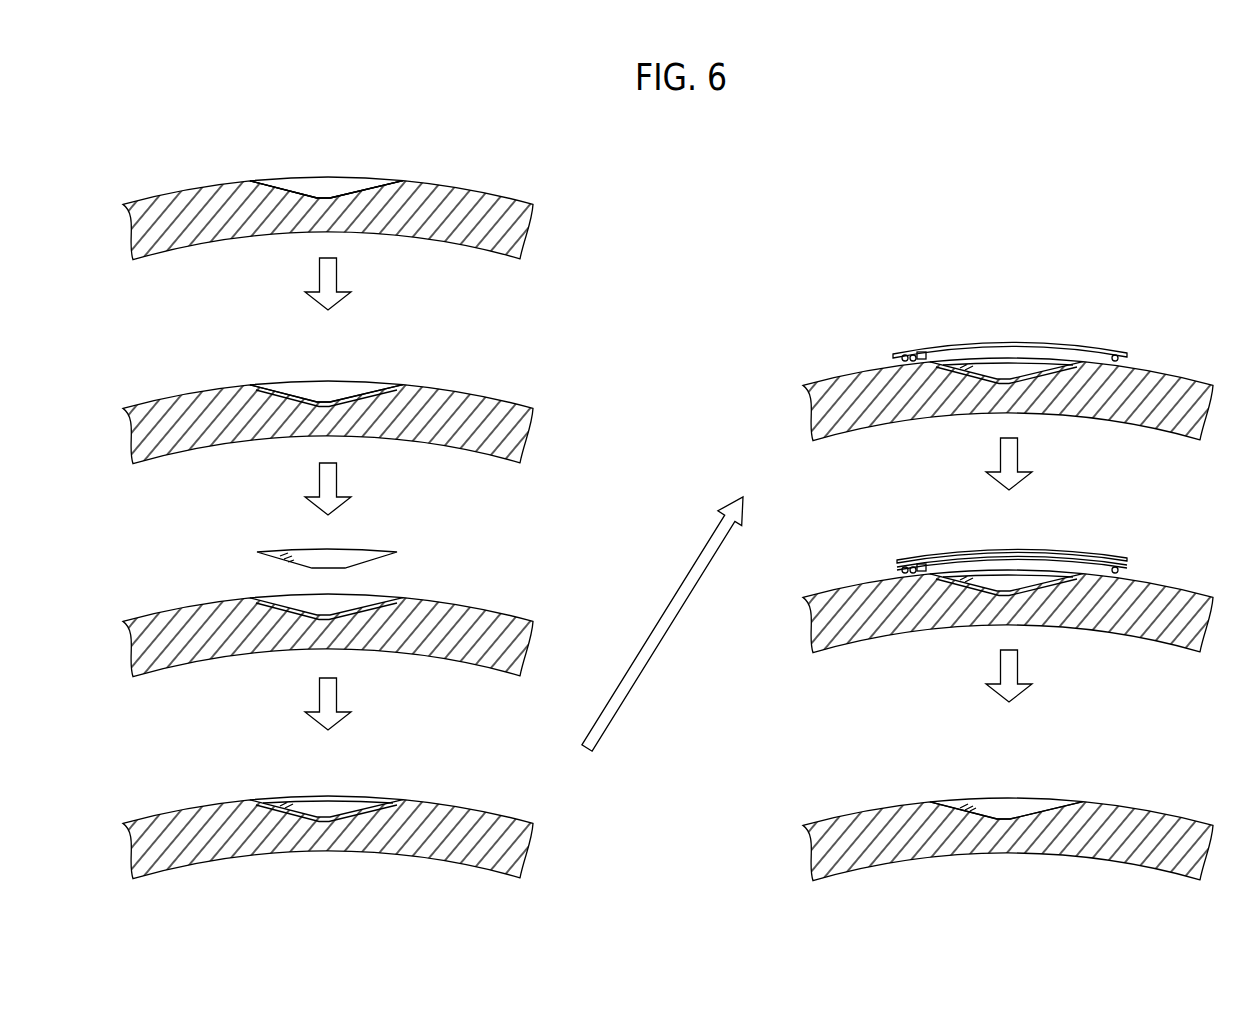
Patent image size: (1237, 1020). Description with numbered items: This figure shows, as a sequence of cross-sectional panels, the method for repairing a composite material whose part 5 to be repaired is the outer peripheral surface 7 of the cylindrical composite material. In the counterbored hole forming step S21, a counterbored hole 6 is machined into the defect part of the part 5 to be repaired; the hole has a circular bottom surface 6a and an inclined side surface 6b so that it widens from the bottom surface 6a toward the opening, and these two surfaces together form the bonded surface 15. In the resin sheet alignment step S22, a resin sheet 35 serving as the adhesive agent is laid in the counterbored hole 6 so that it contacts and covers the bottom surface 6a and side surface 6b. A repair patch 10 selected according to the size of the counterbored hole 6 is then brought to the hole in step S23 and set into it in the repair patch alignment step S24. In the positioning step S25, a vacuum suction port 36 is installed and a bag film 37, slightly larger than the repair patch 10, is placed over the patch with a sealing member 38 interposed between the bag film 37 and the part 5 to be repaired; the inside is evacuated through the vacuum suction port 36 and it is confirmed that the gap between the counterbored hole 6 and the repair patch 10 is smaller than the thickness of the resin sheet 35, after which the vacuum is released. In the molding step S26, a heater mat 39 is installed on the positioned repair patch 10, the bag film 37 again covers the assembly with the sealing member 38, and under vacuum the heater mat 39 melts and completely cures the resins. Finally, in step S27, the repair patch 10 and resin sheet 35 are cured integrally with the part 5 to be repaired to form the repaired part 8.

The part to be repaired 5 is at (190, 190).
The counterbored hole 6 is at (283, 188).
The bonded surface 15 is at (322, 197).
The bottom surface 6a is at (356, 181).
The side surface 6b is at (368, 180).
The outer peripheral surface 7 is at (440, 185).
The resin sheet 35 is at (268, 382).
The repair patch 10 is at (377, 548).
The bag film 37 is at (1000, 347).
The sealing member 38 is at (882, 358).
The vacuum suction port 36 is at (918, 352).
The heater mat 39 is at (1070, 562).
The repaired part 8 is at (1060, 798).
The counterbored hole forming step S21 is at (330, 180).
The resin sheet alignment step S22 is at (330, 386).
The step S23 is at (330, 579).
The repair patch alignment step S24 is at (481, 782).
The positioning step S25 is at (1163, 338).
The molding step S26 is at (1012, 572).
The step S27 is at (1011, 801).